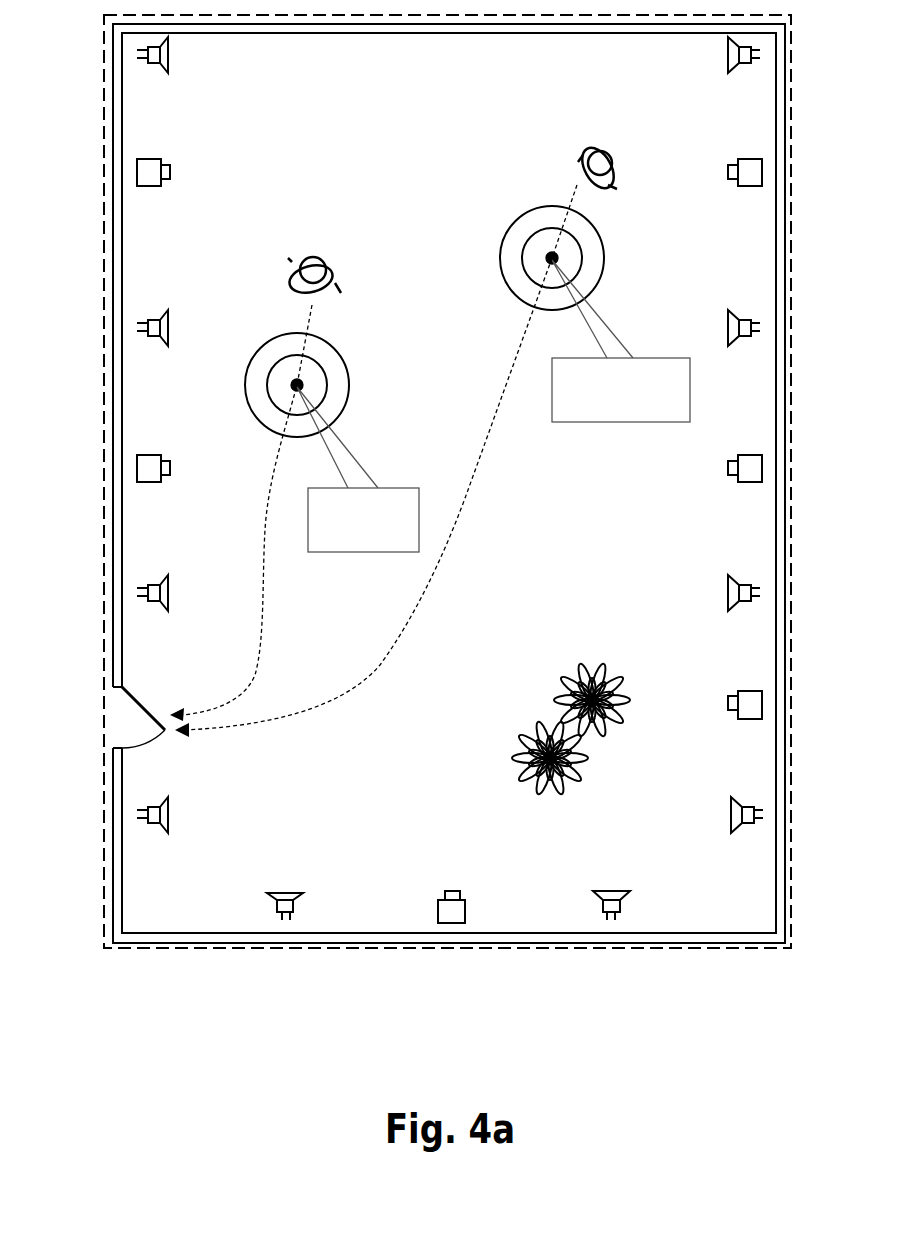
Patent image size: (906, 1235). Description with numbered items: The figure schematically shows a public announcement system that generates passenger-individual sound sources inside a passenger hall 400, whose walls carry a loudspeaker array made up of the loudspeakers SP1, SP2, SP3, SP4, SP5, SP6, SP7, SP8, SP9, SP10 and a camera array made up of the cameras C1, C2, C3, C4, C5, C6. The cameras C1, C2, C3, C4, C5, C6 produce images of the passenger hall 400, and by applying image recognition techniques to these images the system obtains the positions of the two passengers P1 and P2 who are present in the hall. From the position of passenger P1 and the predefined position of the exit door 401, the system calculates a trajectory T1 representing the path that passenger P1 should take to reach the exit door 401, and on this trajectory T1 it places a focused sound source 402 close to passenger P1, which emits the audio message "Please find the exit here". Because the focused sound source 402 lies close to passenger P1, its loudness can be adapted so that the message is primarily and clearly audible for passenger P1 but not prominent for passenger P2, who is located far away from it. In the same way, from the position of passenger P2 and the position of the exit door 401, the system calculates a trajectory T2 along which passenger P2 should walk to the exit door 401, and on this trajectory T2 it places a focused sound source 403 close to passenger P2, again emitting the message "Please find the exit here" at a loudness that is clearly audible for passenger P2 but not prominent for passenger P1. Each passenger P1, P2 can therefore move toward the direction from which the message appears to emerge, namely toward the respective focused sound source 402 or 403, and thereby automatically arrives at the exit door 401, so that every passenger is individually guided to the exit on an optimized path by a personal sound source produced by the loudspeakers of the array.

The passenger hall 400 is at (340, 948).
The exit door 401 is at (132, 718).
The focused sound source 402 is at (303, 383).
The focused sound source 403 is at (545, 258).
The trajectory T1 is at (263, 587).
The trajectory T2 is at (483, 443).
The passenger P1 is at (313, 260).
The passenger P2 is at (598, 149).
The loudspeaker SP1 is at (153, 68).
The loudspeaker SP2 is at (153, 341).
The loudspeaker SP3 is at (153, 605).
The loudspeaker SP4 is at (153, 827).
The loudspeaker SP5 is at (303, 906).
The loudspeaker SP6 is at (629, 905).
The loudspeaker SP7 is at (745, 827).
The loudspeaker SP8 is at (743, 605).
The loudspeaker SP9 is at (743, 341).
The loudspeaker SP10 is at (741, 68).
The camera C1 is at (153, 186).
The camera C2 is at (153, 482).
The camera C3 is at (469, 907).
The camera C4 is at (745, 718).
The camera C5 is at (745, 482).
The camera C6 is at (745, 186).